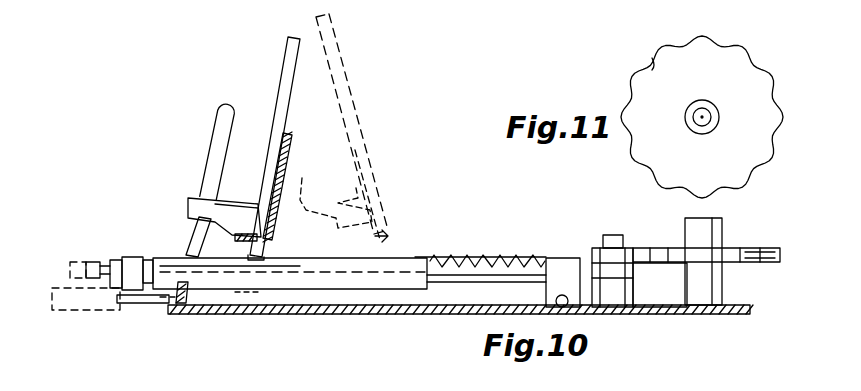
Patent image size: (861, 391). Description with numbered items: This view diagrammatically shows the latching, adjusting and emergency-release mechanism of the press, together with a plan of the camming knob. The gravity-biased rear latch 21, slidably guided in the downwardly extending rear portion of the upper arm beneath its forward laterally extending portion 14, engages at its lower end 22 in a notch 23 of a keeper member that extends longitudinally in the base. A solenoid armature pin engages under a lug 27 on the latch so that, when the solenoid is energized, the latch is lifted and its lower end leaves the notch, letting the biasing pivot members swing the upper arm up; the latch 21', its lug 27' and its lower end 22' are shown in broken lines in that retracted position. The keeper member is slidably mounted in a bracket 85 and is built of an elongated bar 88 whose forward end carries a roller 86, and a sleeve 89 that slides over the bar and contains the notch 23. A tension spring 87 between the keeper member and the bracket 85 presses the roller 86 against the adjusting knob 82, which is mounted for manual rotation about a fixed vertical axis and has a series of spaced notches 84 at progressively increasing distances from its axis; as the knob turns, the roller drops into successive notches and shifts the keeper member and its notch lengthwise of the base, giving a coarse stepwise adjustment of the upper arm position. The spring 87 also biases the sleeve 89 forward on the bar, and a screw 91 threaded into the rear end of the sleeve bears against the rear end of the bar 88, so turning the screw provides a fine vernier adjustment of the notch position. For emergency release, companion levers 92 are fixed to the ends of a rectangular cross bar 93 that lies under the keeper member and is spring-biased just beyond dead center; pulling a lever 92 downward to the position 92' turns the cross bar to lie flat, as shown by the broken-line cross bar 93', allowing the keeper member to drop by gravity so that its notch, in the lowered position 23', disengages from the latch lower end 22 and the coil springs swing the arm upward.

In FIG. 10, the rear latch 21 is at (273, 147).
In FIG. 10, the rear latch in released position 21' is at (361, 127).
In FIG. 10, the forward laterally extending portion 14 is at (282, 190).
In FIG. 10, the lug 27 is at (212, 205).
In FIG. 10, the lug in released position 27' is at (336, 198).
In FIG. 10, the companion levers 92 is at (202, 180).
In FIG. 10, the companion lever in released position 92' is at (82, 280).
In FIG. 10, the screw 91 is at (96, 262).
In FIG. 10, the notch 23 is at (233, 245).
In FIG. 10, the notch in released position 23' is at (261, 318).
In FIG. 10, the lower end of latch 22 is at (278, 247).
In FIG. 10, the lower end of latch in released position 22' is at (409, 226).
In FIG. 10, the sleeve 89 is at (329, 266).
In FIG. 10, the tension spring 87 is at (444, 255).
In FIG. 10, the elongated bar 88 is at (552, 303).
In FIG. 10, the bracket 85 is at (572, 258).
In FIG. 10, the roller 86 is at (608, 238).
In FIG. 10, the notches 84 is at (668, 248).
In FIG. 11, the notches 84 is at (652, 66).
In FIG. 10, the adjusting knob 82 is at (735, 264).
In FIG. 11, the adjusting knob 82 is at (726, 76).
In FIG. 10, the cross bar 93 is at (171, 312).
In FIG. 10, the cross bar in released position 93' is at (155, 314).